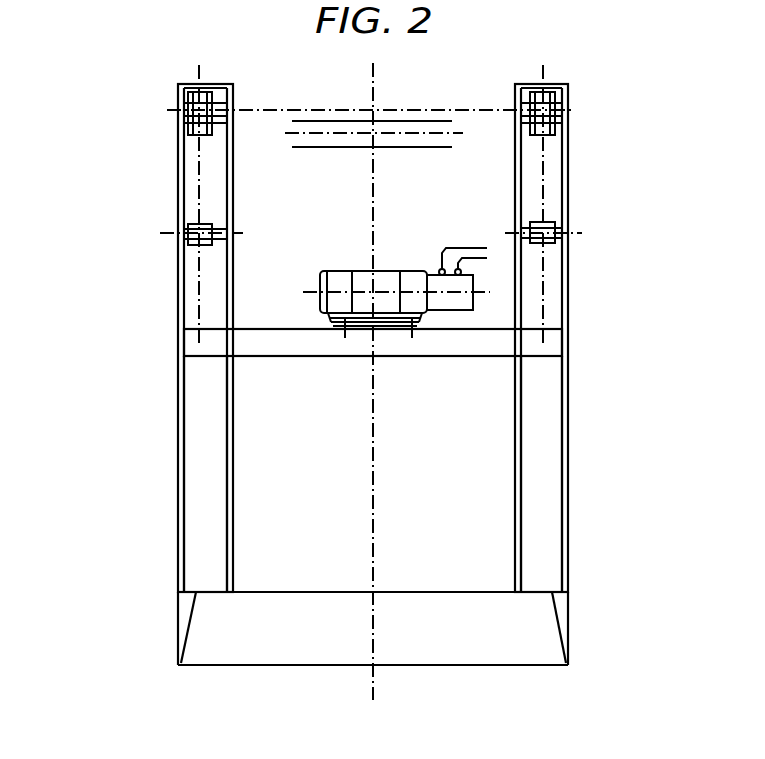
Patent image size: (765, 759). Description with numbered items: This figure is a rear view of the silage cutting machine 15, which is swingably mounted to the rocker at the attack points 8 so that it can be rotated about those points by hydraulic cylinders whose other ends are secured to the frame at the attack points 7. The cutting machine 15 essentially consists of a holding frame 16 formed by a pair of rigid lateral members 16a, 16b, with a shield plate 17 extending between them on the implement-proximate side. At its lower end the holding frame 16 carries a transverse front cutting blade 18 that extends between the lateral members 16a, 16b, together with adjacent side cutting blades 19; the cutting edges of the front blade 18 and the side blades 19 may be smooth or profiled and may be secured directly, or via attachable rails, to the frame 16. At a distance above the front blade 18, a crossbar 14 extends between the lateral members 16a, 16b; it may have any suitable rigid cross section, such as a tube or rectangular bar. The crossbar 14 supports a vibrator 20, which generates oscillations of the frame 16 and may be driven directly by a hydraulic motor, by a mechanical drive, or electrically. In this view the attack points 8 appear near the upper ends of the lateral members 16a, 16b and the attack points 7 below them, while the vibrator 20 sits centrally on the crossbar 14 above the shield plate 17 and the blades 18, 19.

The attack points 7 is at (183, 230).
The attack points 8 is at (190, 117).
The crossbar 14 is at (552, 345).
The silage cutting machine 15 is at (590, 432).
The holding frame 16 is at (160, 474).
The lateral member 16a is at (198, 520).
The lateral member 16b is at (550, 483).
The shield plate 17 is at (468, 498).
The front cutting blade 18 is at (223, 665).
The side cutting blades 19 is at (180, 618).
The vibrator 20 is at (340, 298).